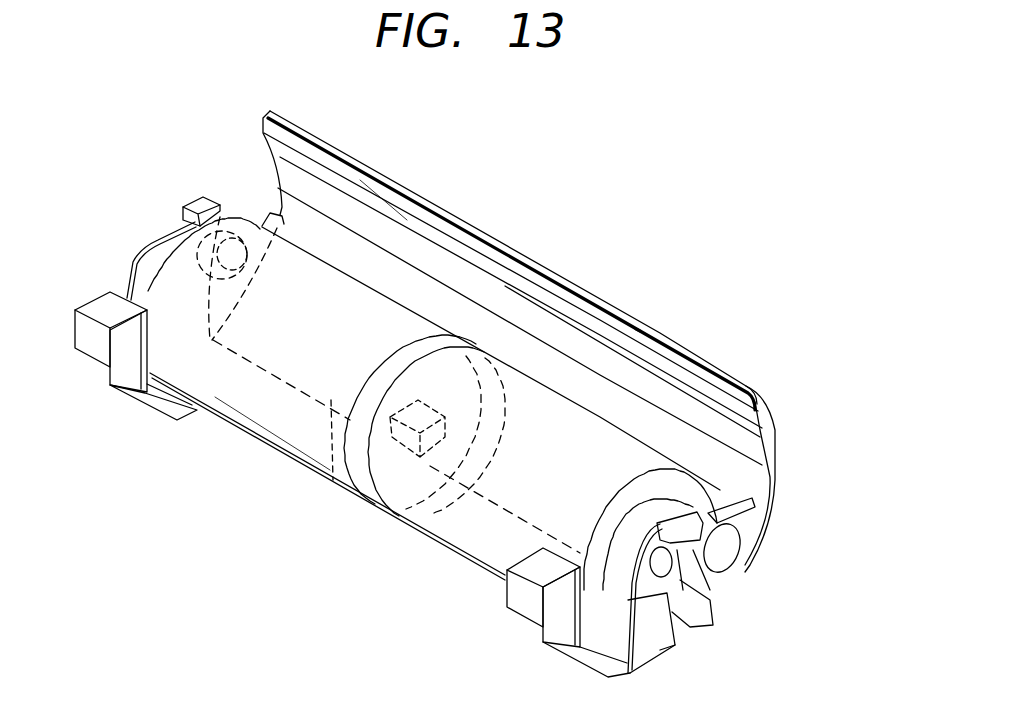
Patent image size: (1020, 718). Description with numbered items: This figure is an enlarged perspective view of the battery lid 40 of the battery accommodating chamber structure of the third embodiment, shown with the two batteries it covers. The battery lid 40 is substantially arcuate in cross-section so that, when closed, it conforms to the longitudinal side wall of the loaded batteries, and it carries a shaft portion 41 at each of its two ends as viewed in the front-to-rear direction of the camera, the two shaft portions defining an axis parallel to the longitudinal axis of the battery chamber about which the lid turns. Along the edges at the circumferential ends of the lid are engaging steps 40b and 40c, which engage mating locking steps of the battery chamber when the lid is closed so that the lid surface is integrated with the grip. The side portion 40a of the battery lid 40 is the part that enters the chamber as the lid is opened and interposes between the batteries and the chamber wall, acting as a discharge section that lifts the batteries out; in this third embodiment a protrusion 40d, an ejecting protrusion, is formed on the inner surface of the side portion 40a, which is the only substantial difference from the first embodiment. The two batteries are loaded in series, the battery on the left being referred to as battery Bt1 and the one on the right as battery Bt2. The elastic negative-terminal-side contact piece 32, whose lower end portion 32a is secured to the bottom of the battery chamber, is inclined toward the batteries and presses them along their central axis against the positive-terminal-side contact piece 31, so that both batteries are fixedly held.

The positive-terminal-side contact piece 31 is at (153, 258).
The negative-terminal-side contact piece 32 is at (657, 630).
The lower end portion 32a is at (592, 662).
The battery lid 40 is at (501, 240).
The side portion 40a is at (282, 418).
The engaging step 40b is at (636, 331).
The engaging step 40c is at (703, 612).
The protrusion 40d is at (333, 480).
The shaft portion 41 is at (229, 237).
The battery Bt1 is at (211, 400).
The battery Bt2 is at (473, 543).